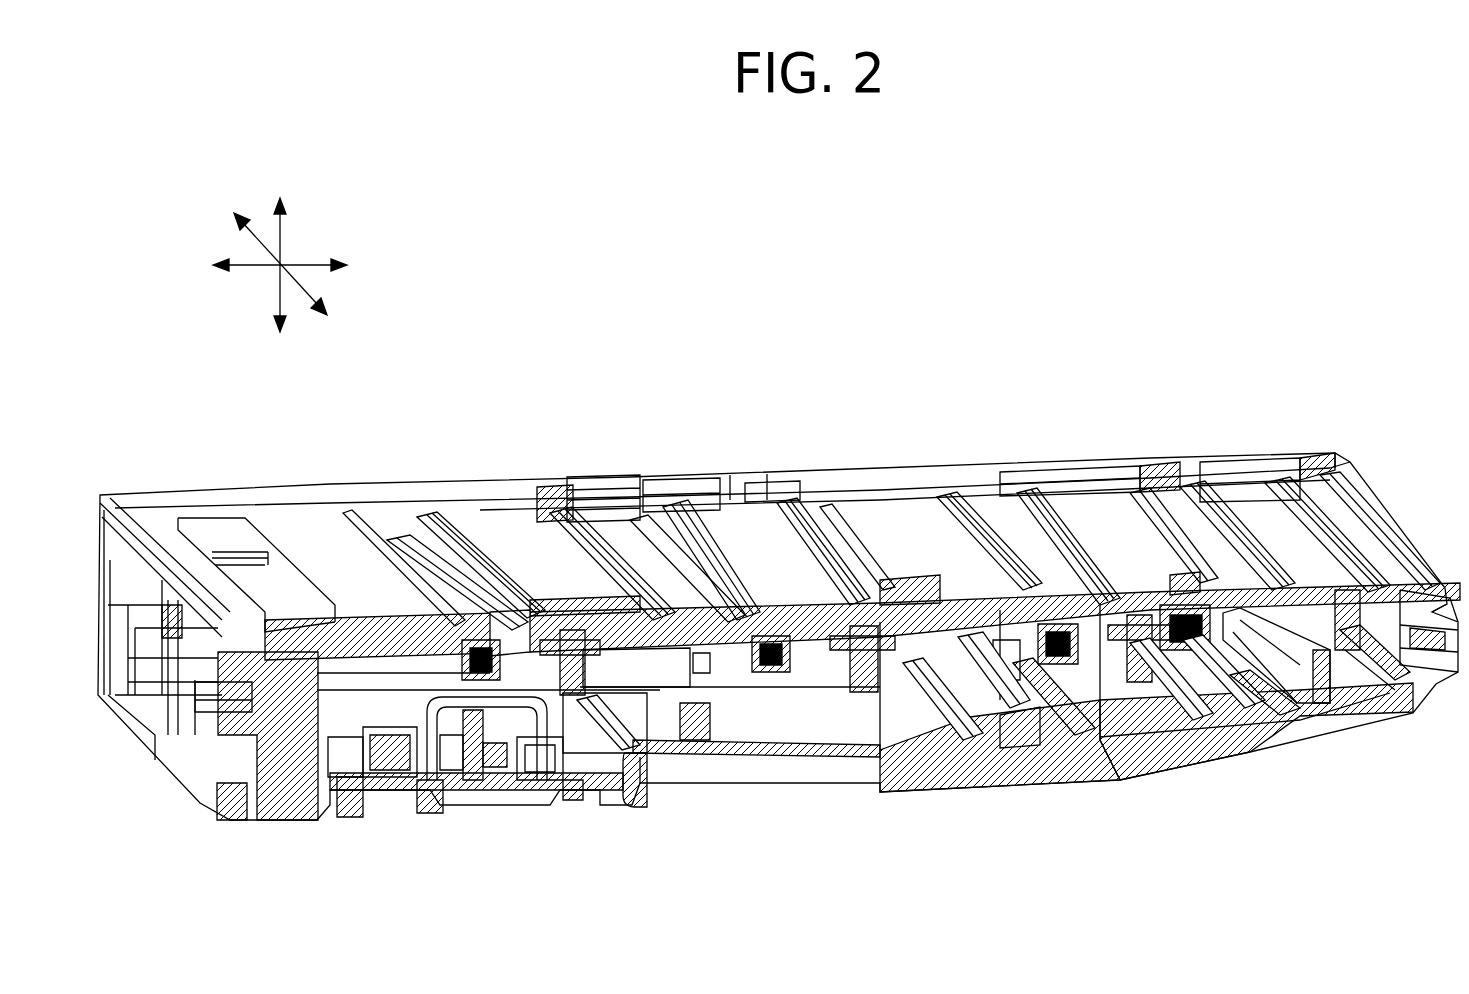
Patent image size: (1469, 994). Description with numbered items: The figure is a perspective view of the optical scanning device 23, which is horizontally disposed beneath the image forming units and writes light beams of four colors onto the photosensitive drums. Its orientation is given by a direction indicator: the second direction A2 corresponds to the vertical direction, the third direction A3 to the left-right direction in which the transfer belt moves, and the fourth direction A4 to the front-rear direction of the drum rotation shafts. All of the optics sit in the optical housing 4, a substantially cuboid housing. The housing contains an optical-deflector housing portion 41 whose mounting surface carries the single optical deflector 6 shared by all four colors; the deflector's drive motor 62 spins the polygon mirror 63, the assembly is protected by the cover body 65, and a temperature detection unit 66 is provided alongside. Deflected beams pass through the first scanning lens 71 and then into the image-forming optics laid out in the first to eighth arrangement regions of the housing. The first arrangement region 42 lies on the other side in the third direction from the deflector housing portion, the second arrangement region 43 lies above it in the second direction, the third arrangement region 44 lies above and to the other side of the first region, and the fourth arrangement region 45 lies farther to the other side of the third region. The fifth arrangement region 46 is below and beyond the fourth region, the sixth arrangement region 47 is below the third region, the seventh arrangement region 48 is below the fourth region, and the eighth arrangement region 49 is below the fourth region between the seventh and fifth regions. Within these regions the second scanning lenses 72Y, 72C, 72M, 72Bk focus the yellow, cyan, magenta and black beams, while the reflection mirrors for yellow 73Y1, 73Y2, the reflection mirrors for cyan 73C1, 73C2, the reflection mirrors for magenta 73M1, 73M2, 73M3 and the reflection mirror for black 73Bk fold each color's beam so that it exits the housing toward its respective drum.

The optical scanning device 23 is at (1158, 334).
The second direction A2 is at (287, 237).
The third direction A3 is at (315, 265).
The fourth direction A4 is at (306, 300).
The optical housing 4 is at (285, 818).
The optical deflector 6 is at (592, 873).
The optical-deflector housing portion 41 is at (625, 797).
The first arrangement region 42 is at (803, 725).
The second arrangement region 43 is at (517, 683).
The third arrangement region 44 is at (820, 678).
The fourth arrangement region 45 is at (1085, 628).
The fifth arrangement region 46 is at (1278, 755).
The sixth arrangement region 47 is at (907, 790).
The seventh arrangement region 48 is at (1055, 775).
The eighth arrangement region 49 is at (1238, 760).
The drive motor 62 is at (490, 800).
The polygon mirror 63 is at (447, 800).
The cover body 65 is at (550, 800).
The temperature detection unit 66 is at (392, 800).
The first scanning lens 71 is at (694, 760).
The second scanning lens for yellow 72Y is at (563, 690).
The second scanning lens for cyan 72C is at (855, 652).
The second scanning lens for magenta 72M is at (1133, 630).
The second scanning lens for black 72Bk is at (1328, 738).
The reflection mirror for yellow 73Y1 is at (933, 772).
The reflection mirror for yellow 73Y2 is at (487, 700).
The reflection mirror for cyan 73C1 is at (1083, 765).
The reflection mirror for cyan 73C2 is at (772, 650).
The reflection mirror for magenta 73M1 is at (1196, 762).
The reflection mirror for magenta 73M2 is at (1212, 607).
The reflection mirror for magenta 73M3 is at (1048, 622).
The reflection mirror for black 73Bk is at (1395, 715).